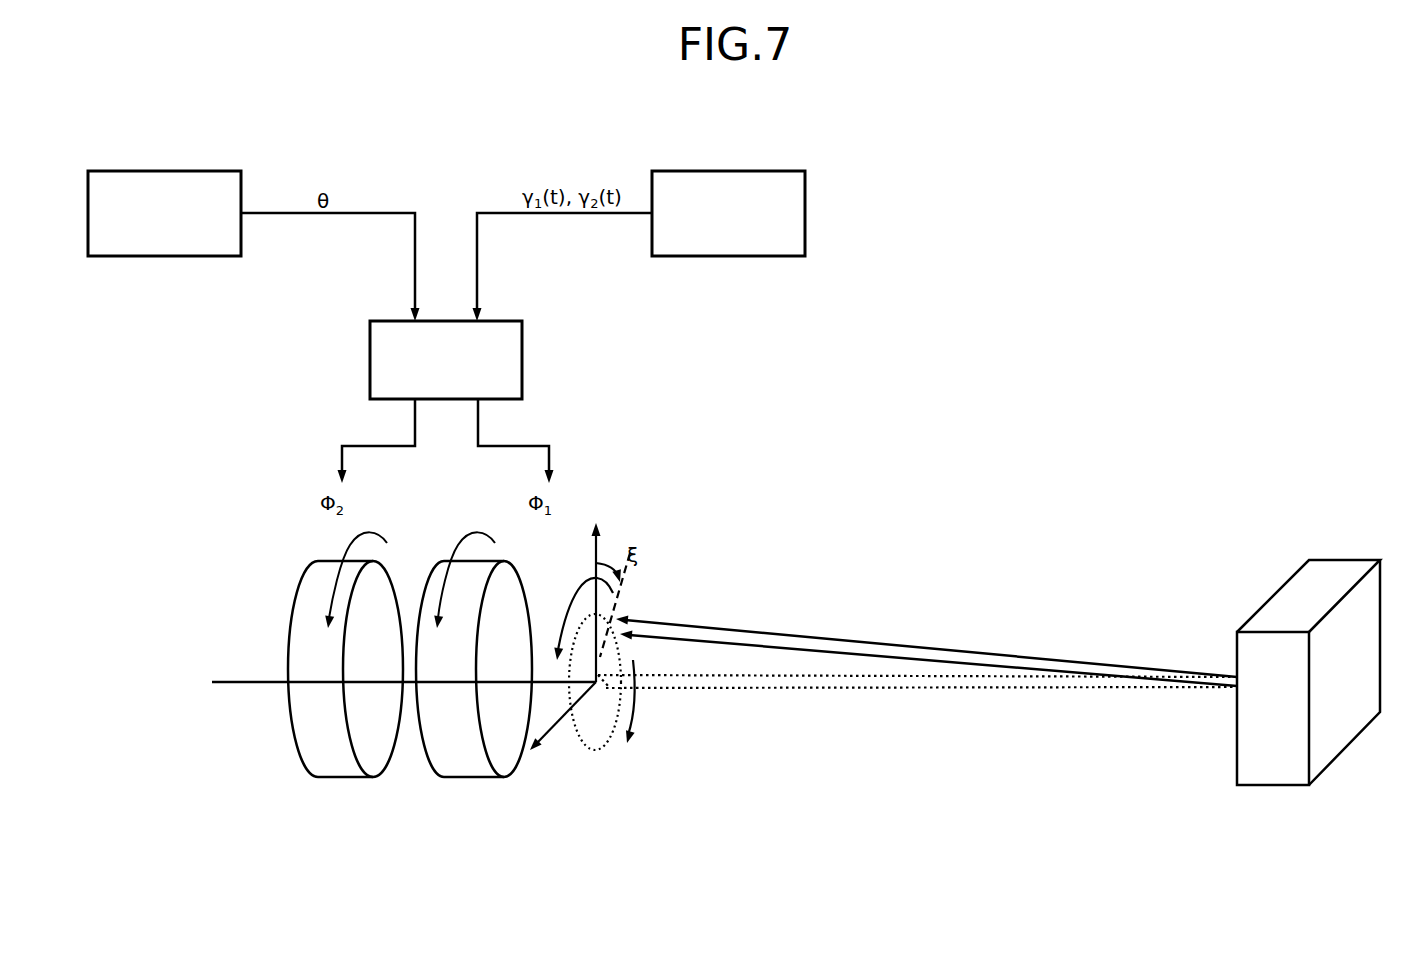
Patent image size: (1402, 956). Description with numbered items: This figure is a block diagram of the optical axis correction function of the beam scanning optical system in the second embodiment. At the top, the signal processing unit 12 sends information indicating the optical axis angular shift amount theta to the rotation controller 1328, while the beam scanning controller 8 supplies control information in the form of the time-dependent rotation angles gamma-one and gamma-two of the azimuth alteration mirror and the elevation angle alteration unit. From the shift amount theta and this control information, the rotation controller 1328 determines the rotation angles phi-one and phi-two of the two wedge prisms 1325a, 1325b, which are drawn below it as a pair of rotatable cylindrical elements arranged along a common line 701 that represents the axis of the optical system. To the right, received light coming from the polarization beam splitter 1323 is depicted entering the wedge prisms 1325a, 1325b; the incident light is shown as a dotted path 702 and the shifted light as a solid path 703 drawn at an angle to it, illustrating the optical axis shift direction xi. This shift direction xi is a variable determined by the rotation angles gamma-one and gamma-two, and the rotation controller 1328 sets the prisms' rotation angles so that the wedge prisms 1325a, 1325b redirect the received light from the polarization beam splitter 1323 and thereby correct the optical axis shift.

The signal processing unit 12 is at (190, 171).
The beam scanning controller 8 is at (753, 171).
The rotation controller 1328 is at (522, 348).
The optical axis 701 is at (245, 682).
The wedge prism 1325b is at (328, 777).
The wedge prism 1325a is at (472, 777).
The reflected beam 703 is at (922, 644).
The incident beam 702 is at (1053, 688).
The polarization beam splitter 1323 is at (1333, 560).